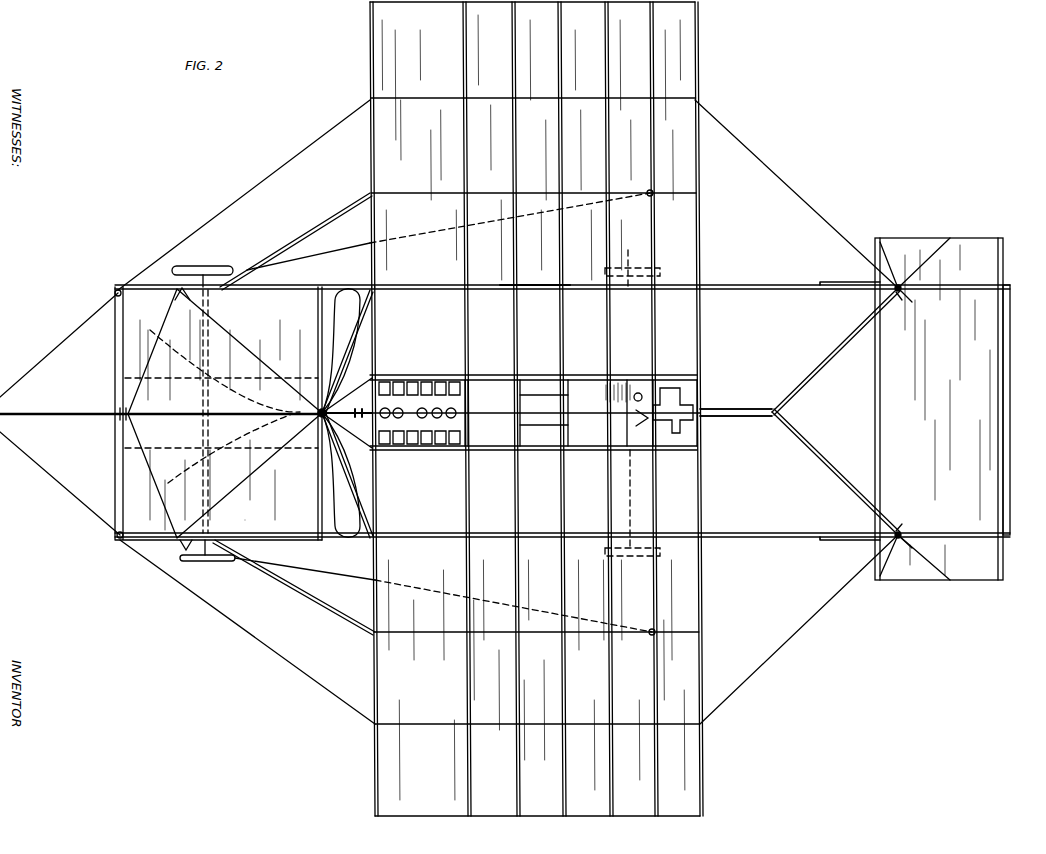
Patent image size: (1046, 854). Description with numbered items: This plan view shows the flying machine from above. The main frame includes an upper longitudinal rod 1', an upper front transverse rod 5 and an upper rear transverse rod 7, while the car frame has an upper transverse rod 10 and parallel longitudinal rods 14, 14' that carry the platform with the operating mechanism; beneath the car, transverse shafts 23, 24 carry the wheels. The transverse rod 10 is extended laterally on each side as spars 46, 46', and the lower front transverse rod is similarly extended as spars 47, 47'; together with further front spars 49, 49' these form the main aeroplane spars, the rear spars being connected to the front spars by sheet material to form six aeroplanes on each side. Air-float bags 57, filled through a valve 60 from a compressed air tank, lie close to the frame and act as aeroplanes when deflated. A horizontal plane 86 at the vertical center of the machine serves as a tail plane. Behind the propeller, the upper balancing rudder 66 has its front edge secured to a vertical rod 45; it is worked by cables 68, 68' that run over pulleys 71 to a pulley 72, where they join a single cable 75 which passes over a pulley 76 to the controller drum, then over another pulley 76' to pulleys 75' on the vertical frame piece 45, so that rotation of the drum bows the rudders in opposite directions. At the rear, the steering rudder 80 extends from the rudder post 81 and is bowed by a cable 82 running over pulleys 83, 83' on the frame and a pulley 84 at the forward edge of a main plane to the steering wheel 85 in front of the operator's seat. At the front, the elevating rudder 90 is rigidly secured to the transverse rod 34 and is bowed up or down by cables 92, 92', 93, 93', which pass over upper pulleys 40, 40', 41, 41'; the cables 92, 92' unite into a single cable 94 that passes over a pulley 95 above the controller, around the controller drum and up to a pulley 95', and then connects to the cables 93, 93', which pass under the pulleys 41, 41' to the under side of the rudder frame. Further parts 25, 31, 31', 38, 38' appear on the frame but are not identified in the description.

The upper longitudinal rod 1' is at (535, 295).
The upper front transverse rod 5 is at (699, 349).
The upper rear transverse rod 7 is at (113, 494).
The upper transverse rod 10 is at (378, 355).
The longitudinal rod 14 is at (466, 414).
The longitudinal rod 14' is at (544, 403).
The transverse shaft 23 is at (294, 587).
The transverse shaft 24 is at (672, 530).
The control lever 25 is at (213, 562).
The lower longitudinal rail 31 is at (562, 526).
The upper longitudinal rail 31' is at (562, 295).
The transverse rod 34 is at (1009, 446).
The bearing plate 38 is at (850, 524).
The bearing plate 38' is at (850, 297).
The upper pulley 40 is at (907, 526).
The upper pulley 40' is at (903, 274).
The pulley 41 is at (912, 539).
The pulley 41' is at (914, 297).
The vertical rod 45 is at (325, 413).
The main aeroplane spar 46 is at (364, 551).
The main aeroplane spar 46' is at (343, 144).
The main aeroplane spar 47 is at (715, 551).
The main aeroplane spar 47' is at (710, 144).
The front spar 49 is at (560, 409).
The front spar 49' is at (454, 207).
The air-float bag 57 is at (345, 413).
The valve 60 is at (596, 388).
The upper balancing rudder 66 is at (190, 413).
The cable 68 is at (225, 475).
The cable 68' is at (225, 351).
The pulley 71 is at (186, 539).
The pulley 72 is at (316, 424).
The single cable 75 is at (536, 404).
The pulley 75' is at (324, 405).
The pulley 76 is at (643, 389).
The pulley 76' is at (643, 426).
The steering rudder 80 is at (53, 416).
The rudder post 81 is at (120, 412).
The cable 82 is at (64, 487).
The pulley 83 is at (106, 531).
The pulley 83' is at (104, 297).
The pulley 84 is at (648, 196).
The steering wheel 85 is at (630, 392).
The horizontal plane 86 is at (221, 411).
The elevating rudder 90 is at (939, 409).
The cable 92 is at (835, 473).
The cable 92' is at (835, 350).
The cable 93 is at (837, 470).
The cable 93' is at (837, 353).
The single cable 94 is at (742, 409).
The pulley 95 is at (736, 399).
The pulley 95' is at (736, 424).